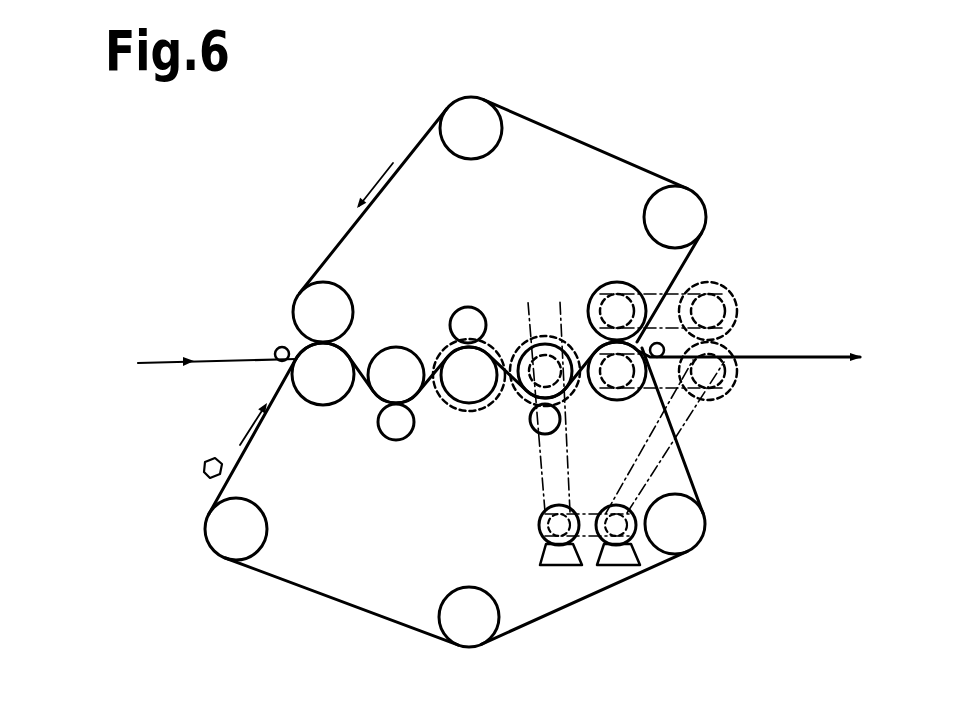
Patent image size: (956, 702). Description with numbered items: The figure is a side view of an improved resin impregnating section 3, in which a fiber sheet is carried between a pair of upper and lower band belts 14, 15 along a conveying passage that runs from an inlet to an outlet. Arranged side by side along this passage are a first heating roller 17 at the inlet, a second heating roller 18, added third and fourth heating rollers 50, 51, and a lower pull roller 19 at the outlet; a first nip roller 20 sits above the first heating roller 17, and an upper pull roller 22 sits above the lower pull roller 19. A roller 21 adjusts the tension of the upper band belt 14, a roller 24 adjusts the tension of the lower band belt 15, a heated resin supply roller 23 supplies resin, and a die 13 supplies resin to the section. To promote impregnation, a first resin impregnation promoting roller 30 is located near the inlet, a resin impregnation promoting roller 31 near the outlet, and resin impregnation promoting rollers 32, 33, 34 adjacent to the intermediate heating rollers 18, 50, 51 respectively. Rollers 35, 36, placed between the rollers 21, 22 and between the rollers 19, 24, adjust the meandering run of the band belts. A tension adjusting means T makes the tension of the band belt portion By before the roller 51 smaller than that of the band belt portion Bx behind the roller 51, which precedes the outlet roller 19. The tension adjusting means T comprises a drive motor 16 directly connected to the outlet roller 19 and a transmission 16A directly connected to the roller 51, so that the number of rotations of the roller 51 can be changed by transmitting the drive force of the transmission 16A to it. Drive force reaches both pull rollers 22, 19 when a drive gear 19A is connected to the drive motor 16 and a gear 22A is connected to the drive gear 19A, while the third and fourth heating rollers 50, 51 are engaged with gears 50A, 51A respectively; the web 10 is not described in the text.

The resin impregnating section 3 is at (254, 186).
The web 10 is at (205, 361).
The die 13 is at (205, 462).
The upper band belt 14 is at (412, 152).
The lower band belt 15 is at (340, 601).
The drive motor 16 is at (622, 562).
The transmission 16A is at (545, 549).
The first heating roller 17 is at (320, 398).
The second heating roller 18 is at (396, 350).
The lower pull roller 19 is at (617, 398).
The drive gear 19A is at (738, 392).
The first nip roller 20 is at (305, 310).
The tension adjusting roller for upper band belt 21 is at (478, 102).
The upper pull roller 22 is at (617, 292).
The gear 22A is at (738, 299).
The heated resin supply roller 23 is at (212, 545).
The tension adjusting roller for lower band belt 24 is at (470, 645).
The first resin impregnation promoting roller 30 is at (276, 350).
The resin impregnation promoting roller 31 is at (661, 345).
The resin impregnation promoting roller 32 is at (396, 438).
The resin impregnation promoting roller 33 is at (468, 318).
The resin impregnation promoting roller 34 is at (531, 430).
The meandering adjusting roller 35 is at (700, 218).
The meandering adjusting roller 36 is at (705, 528).
The third heating roller 50 is at (476, 393).
The gear 50A is at (455, 410).
The fourth heating roller 51 is at (556, 354).
The gear 51A is at (535, 336).
The band belt portion Bx is at (585, 350).
The band belt portion By is at (507, 356).
The tension adjusting means T is at (588, 500).